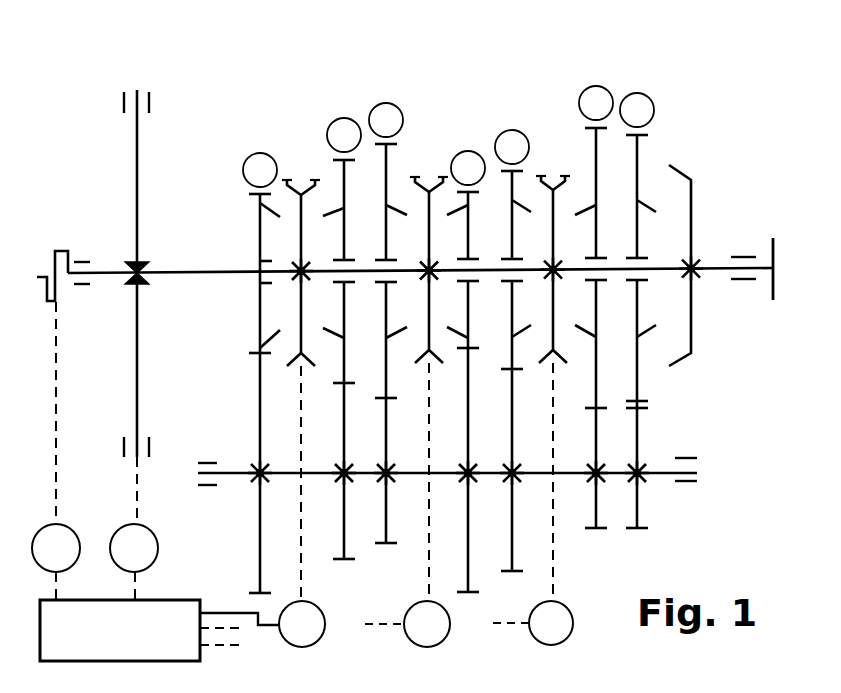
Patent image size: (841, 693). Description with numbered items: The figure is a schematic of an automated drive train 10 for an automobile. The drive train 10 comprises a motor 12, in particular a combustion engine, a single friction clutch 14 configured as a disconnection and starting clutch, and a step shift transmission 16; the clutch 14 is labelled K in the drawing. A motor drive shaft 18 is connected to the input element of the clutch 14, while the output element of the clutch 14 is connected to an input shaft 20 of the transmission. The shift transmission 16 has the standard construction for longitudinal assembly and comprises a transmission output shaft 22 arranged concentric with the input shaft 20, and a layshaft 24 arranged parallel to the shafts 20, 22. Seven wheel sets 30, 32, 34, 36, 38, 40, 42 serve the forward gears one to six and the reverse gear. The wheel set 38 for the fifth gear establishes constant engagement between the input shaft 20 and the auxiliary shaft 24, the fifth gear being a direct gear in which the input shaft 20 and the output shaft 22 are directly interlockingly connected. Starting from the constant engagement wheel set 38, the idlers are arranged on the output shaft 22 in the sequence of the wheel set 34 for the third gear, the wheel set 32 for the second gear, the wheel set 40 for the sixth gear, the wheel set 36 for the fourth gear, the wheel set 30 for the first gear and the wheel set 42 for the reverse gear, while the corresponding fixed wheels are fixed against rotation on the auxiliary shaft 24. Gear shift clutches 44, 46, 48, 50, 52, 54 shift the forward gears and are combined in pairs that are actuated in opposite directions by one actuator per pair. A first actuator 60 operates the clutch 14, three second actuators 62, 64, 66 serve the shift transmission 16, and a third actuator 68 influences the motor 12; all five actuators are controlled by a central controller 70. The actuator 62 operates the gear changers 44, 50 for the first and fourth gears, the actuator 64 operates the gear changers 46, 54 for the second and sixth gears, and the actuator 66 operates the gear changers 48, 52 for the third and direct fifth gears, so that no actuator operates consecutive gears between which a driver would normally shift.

The drive train 10 is at (716, 138).
The motor 12 is at (66, 252).
The friction clutch 14 is at (137, 168).
The shift transmission 16 is at (283, 330).
The motor drive shaft 18 is at (108, 278).
The input shaft 20 is at (172, 278).
The transmission output shaft 22 is at (719, 267).
The layshaft 24 is at (233, 477).
The wheel set for the first gear 30 is at (597, 84).
The wheel set for the second gear 32 is at (387, 92).
The wheel set for the third gear 34 is at (346, 110).
The wheel set for the fourth gear 36 is at (511, 128).
The wheel set for the fifth gear 38 is at (251, 150).
The wheel set for the sixth gear 40 is at (469, 147).
The wheel set for the reverse gear 42 is at (636, 90).
The gear shift clutch 44 is at (565, 174).
The gear shift clutch 46 is at (416, 175).
The gear shift clutch 48 is at (313, 178).
The gear shift clutch 50 is at (541, 174).
The gear shift clutch 52 is at (288, 178).
The gear shift clutch 54 is at (442, 175).
The first actuator 60 is at (146, 560).
The second actuator 62 is at (563, 635).
The second actuator 64 is at (439, 636).
The second actuator 66 is at (314, 636).
The third actuator 68 is at (68, 560).
The central controller 70 is at (124, 640).
The clutch K is at (137, 171).